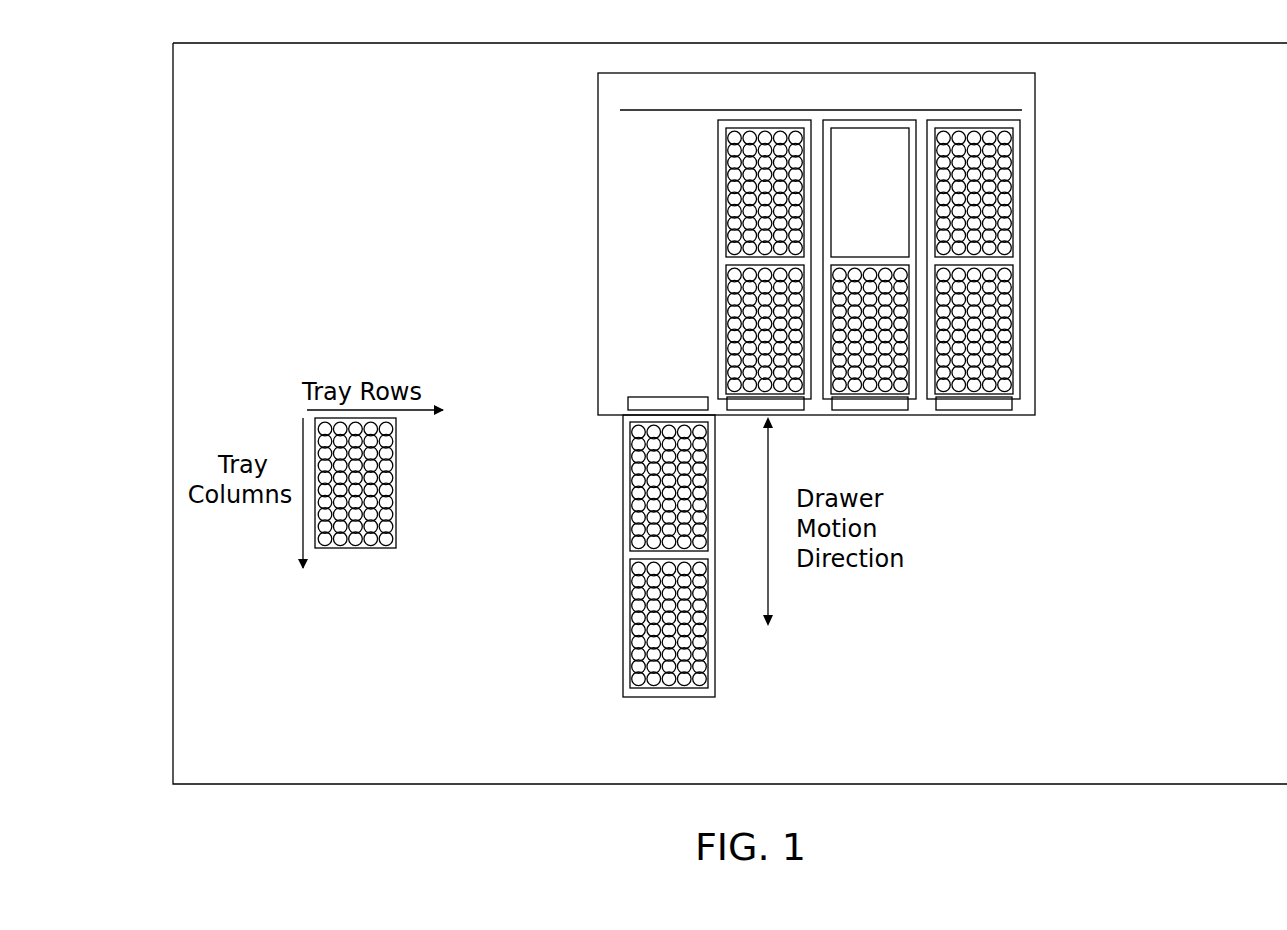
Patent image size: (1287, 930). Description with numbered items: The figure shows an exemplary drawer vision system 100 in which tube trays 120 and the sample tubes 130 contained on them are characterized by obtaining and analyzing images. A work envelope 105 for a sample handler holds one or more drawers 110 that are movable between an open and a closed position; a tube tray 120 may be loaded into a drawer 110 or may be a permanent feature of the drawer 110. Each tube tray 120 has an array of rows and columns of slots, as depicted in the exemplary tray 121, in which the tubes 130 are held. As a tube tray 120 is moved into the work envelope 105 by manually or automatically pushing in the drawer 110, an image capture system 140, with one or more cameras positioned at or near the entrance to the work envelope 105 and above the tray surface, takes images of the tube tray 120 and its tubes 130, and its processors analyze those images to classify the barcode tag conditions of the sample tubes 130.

The drawer vision system 100 is at (283, 24).
The work envelope 105 is at (1035, 93).
The drawer 110 is at (1020, 360).
The tube tray 120 is at (1003, 285).
The exemplary tray 121 is at (355, 501).
The sample tube 130 is at (699, 655).
The image capture system 140 is at (630, 399).